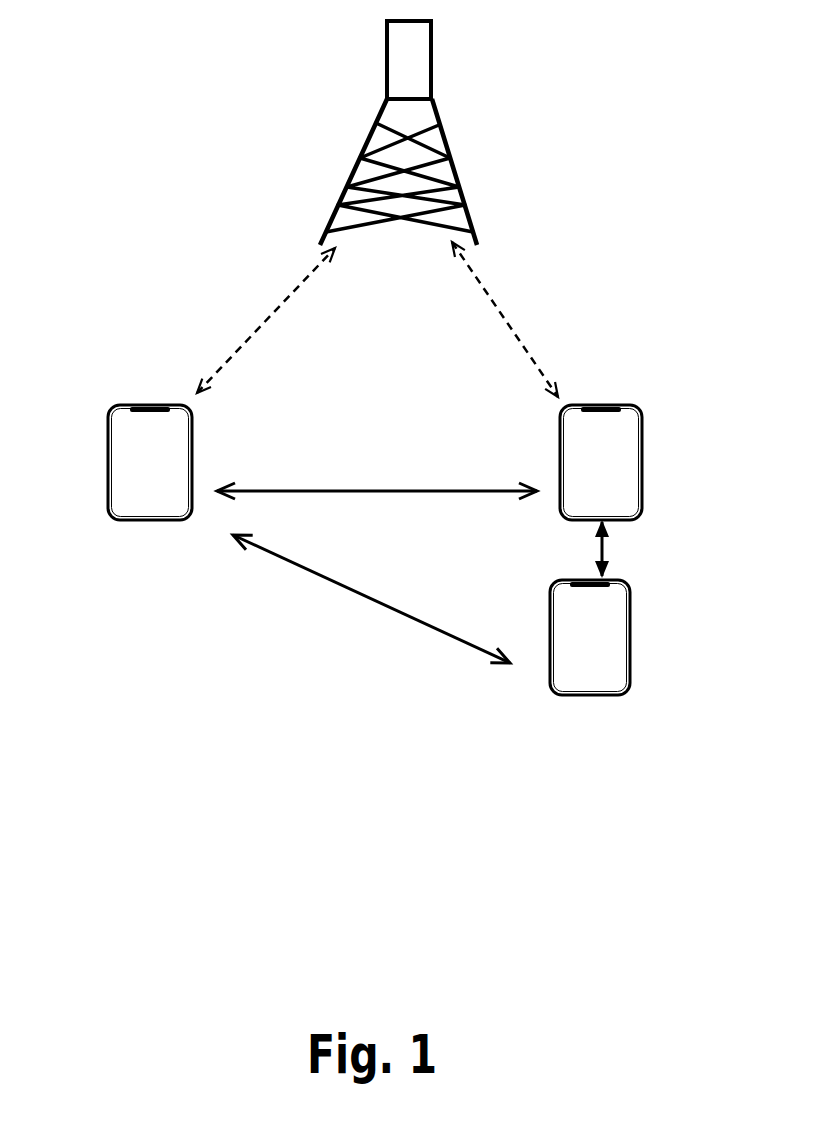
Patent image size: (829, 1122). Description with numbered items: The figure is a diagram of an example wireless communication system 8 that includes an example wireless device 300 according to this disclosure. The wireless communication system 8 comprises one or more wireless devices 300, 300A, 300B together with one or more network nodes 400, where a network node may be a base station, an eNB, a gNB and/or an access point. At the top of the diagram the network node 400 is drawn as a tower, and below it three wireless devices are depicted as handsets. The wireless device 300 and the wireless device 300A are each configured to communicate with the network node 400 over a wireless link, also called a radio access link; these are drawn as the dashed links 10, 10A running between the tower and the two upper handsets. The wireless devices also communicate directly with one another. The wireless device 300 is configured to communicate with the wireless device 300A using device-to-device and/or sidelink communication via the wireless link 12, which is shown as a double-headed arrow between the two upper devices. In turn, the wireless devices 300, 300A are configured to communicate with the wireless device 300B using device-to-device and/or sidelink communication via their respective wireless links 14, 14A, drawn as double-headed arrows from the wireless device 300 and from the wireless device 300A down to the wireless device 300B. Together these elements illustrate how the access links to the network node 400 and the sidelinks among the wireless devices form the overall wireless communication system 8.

The wireless communication system 8 is at (180, 78).
The network node 400 is at (460, 188).
The wireless link 10 is at (247, 337).
The wireless link 10A is at (510, 323).
The wireless device 300 is at (150, 462).
The wireless device 300A is at (601, 462).
The wireless device 300B is at (590, 637).
The wireless link 12 is at (343, 490).
The wireless link 14 is at (377, 605).
The wireless link 14A is at (605, 548).